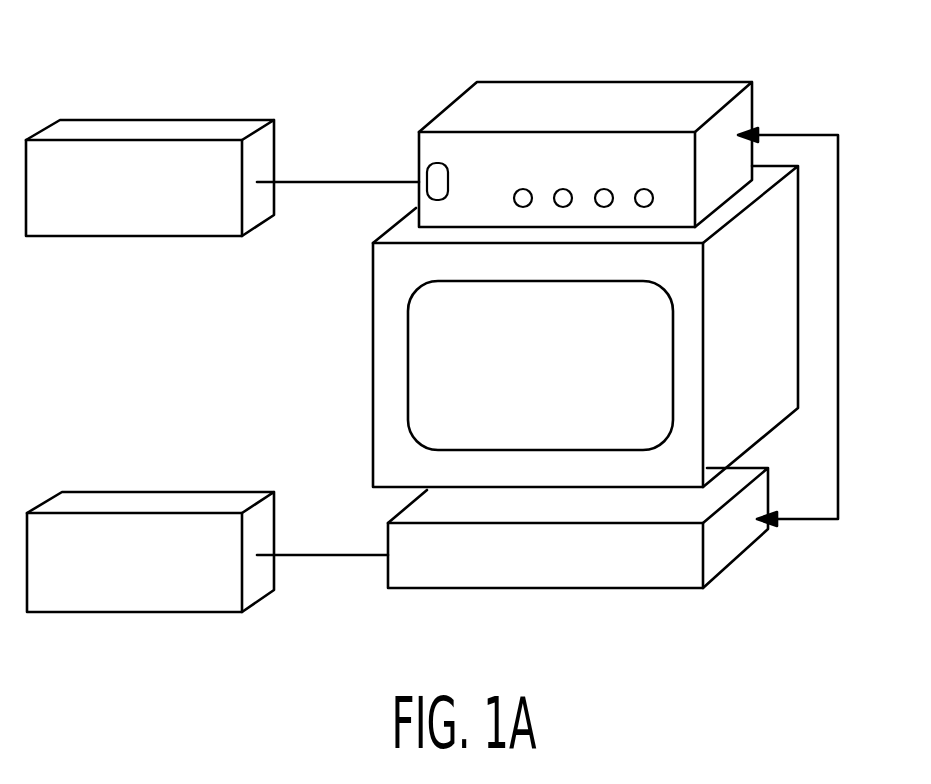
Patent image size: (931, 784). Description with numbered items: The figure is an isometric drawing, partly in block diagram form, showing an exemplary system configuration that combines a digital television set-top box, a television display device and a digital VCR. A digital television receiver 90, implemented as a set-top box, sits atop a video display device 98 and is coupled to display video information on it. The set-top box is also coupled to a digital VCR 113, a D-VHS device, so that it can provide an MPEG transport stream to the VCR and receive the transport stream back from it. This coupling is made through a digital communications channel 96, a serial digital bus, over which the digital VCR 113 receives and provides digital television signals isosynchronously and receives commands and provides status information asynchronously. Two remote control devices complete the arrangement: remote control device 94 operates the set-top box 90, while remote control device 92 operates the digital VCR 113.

The digital television receiver 90 is at (604, 81).
The remote control device 92 is at (180, 492).
The remote control device 94 is at (213, 120).
The digital communications channel 96 is at (838, 333).
The video display device 98 is at (373, 358).
The digital VCR 113 is at (556, 590).